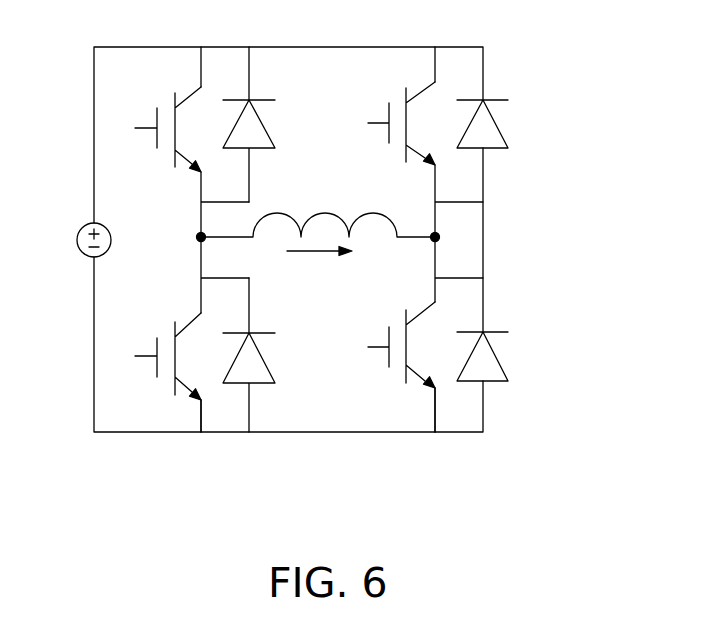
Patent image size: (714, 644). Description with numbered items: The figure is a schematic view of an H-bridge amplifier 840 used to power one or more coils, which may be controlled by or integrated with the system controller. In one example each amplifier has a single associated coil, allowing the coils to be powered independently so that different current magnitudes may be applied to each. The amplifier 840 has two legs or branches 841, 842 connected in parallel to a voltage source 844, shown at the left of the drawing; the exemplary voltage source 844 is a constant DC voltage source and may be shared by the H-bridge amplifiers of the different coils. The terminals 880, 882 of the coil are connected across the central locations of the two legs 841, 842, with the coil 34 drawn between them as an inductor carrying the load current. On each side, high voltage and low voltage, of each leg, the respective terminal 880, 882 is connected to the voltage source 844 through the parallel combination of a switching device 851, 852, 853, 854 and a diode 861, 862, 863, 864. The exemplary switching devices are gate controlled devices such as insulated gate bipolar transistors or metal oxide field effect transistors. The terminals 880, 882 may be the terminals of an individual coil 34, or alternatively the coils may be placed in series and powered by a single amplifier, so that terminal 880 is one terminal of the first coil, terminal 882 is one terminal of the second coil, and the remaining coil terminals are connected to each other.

The H-bridge amplifier 840 is at (336, 454).
The first leg 841 is at (231, 451).
The second leg 842 is at (458, 448).
The voltage source 844 is at (74, 220).
The switching device 851 is at (143, 111).
The switching device 852 is at (138, 368).
The switching device 853 is at (371, 107).
The switching device 854 is at (378, 367).
The diode 861 is at (287, 156).
The diode 862 is at (286, 358).
The diode 863 is at (528, 117).
The diode 864 is at (526, 357).
The coil terminal 880 is at (197, 240).
The coil terminal 882 is at (439, 238).
The coil 34 is at (335, 190).